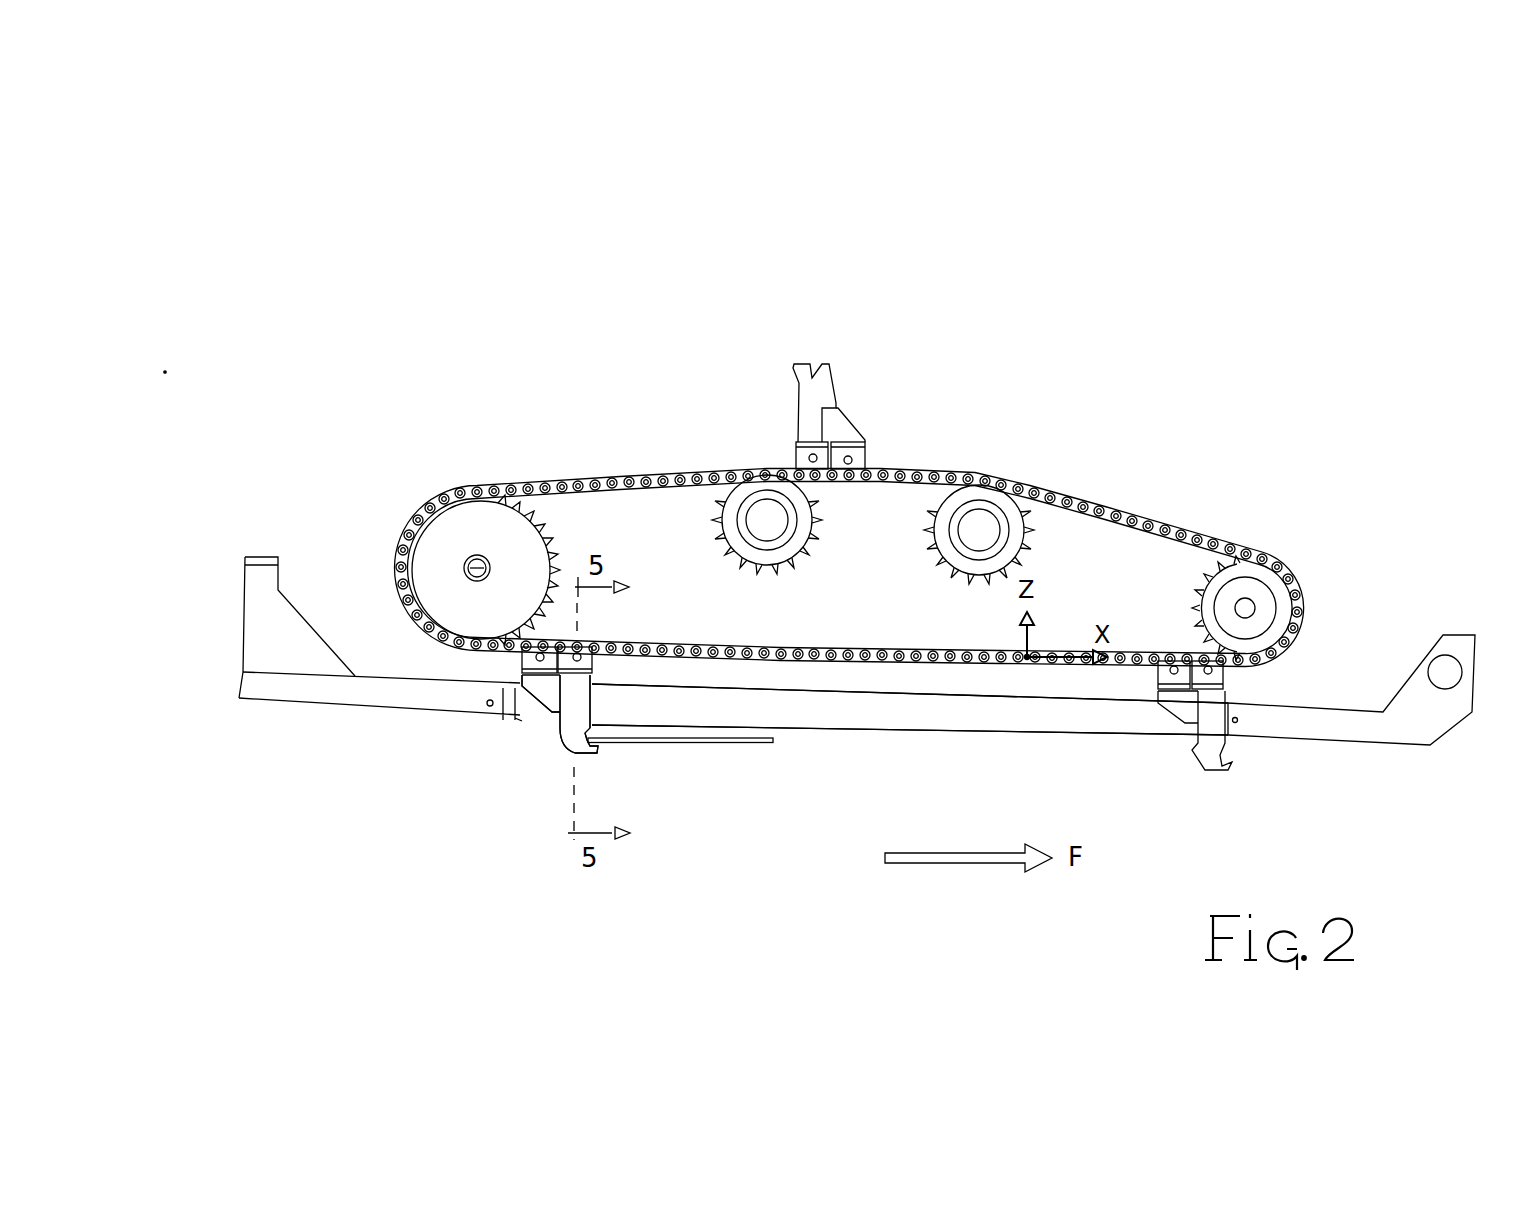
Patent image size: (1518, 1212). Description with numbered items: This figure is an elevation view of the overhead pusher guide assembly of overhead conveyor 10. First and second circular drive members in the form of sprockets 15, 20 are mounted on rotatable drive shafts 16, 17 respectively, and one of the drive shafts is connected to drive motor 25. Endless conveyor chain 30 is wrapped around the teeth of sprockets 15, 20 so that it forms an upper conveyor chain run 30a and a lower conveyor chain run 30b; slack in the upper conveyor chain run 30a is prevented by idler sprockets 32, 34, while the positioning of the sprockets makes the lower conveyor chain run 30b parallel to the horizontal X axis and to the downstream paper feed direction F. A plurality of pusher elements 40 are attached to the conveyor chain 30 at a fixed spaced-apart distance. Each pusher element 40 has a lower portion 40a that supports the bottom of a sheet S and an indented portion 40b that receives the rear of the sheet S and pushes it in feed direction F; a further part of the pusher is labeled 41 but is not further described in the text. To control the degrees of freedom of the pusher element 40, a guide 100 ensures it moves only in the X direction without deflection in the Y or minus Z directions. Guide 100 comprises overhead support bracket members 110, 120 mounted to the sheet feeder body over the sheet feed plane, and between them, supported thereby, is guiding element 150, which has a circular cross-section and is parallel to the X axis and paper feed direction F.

The overhead conveyor 10 is at (491, 380).
The sprocket 15 is at (1247, 573).
The drive shaft 16 is at (1250, 607).
The drive shaft 17 is at (462, 568).
The sprocket 20 is at (440, 500).
The drive motor 25 is at (1216, 600).
The endless conveyor chain 30 is at (849, 524).
The upper conveyor chain run 30a is at (1147, 515).
The lower conveyor chain run 30b is at (808, 637).
The idler sprocket 32 is at (962, 497).
The idler sprocket 34 is at (740, 492).
The pusher element 40 is at (816, 390).
The lower portion 40a is at (583, 740).
The indented portion 40b is at (560, 715).
The tool body 41 is at (580, 702).
The guide 100 is at (396, 742).
The overhead support bracket member 110 is at (260, 636).
The overhead support bracket member 120 is at (1458, 640).
The guiding element 150 is at (838, 725).
The sheet S is at (720, 744).